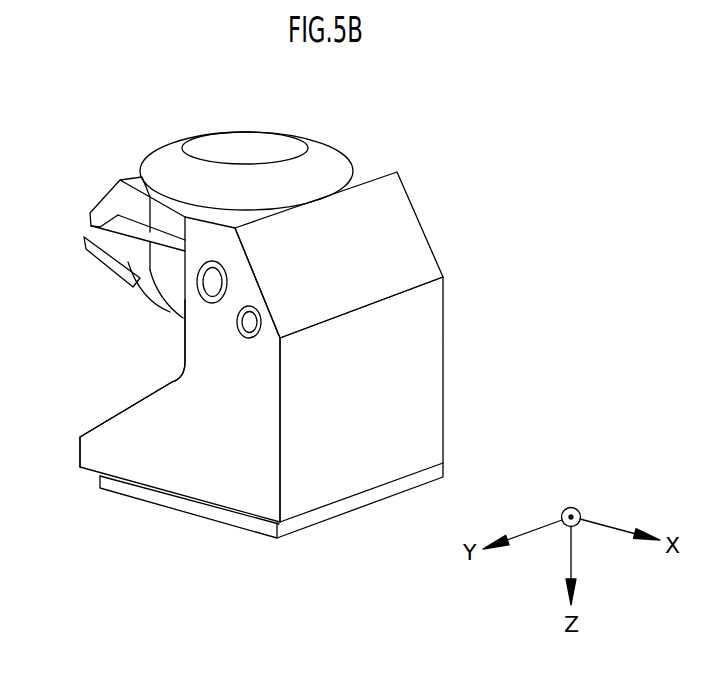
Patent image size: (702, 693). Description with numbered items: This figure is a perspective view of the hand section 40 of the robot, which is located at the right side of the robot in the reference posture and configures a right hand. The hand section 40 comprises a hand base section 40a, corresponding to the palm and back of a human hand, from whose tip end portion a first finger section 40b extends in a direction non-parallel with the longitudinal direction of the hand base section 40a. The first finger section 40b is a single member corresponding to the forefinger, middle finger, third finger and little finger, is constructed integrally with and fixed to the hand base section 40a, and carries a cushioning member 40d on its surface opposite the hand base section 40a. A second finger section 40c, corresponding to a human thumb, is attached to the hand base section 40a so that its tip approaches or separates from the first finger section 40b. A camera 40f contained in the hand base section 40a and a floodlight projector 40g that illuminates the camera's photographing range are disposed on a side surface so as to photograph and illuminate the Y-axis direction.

The hand section 40 is at (446, 184).
The hand base section 40a is at (440, 387).
The first finger section 40b is at (106, 206).
The second finger section 40c is at (178, 362).
The cushioning member 40d is at (317, 155).
The camera 40f is at (197, 292).
The floodlight projector 40g is at (237, 322).